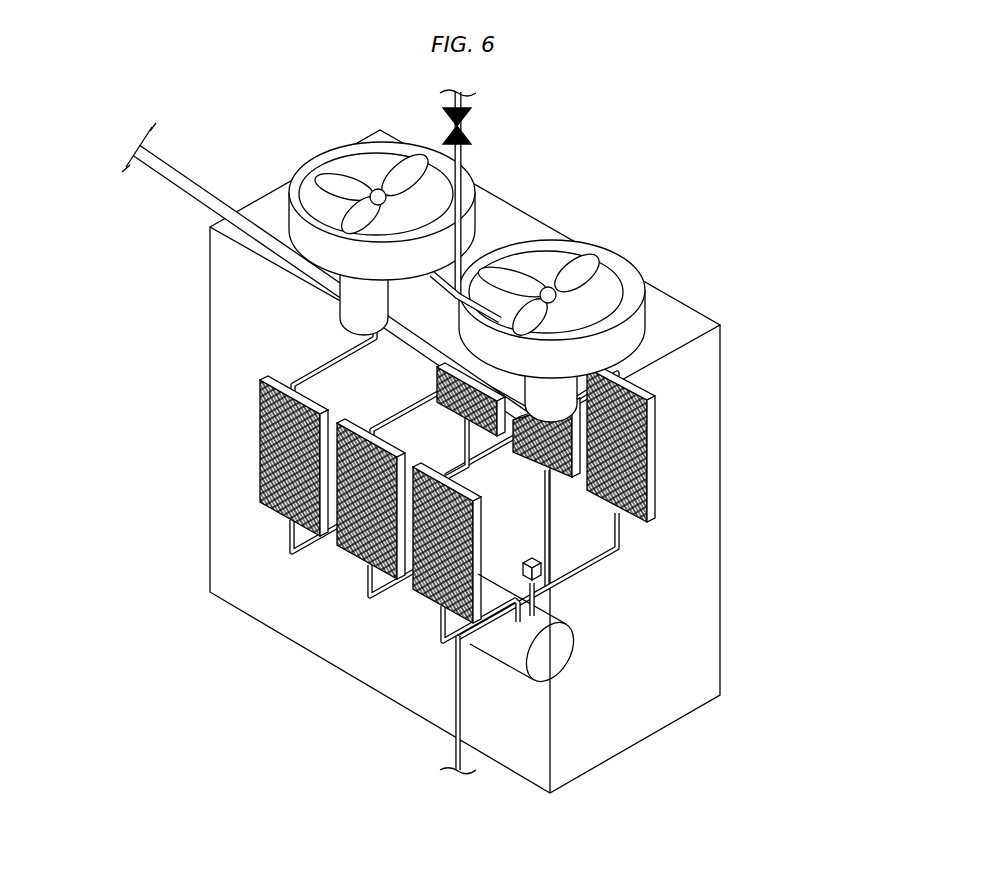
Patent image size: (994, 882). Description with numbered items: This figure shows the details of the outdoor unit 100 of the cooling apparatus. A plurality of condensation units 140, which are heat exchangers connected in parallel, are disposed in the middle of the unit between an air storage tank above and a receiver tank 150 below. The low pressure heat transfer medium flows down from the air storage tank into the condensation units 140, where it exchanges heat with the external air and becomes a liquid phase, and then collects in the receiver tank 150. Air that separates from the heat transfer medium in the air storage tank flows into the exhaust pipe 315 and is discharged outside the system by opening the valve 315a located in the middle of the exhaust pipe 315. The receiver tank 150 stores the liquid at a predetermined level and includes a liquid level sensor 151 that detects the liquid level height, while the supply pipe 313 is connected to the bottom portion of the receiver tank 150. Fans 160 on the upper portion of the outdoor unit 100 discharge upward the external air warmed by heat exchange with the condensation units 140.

The outdoor unit 100 is at (690, 233).
The condensation units 140 is at (405, 400).
The receiver tank 150 is at (397, 603).
The liquid level sensor 151 is at (550, 578).
The fans 160 is at (373, 185).
The supply pipe 313 is at (450, 703).
The exhaust pipe 315 is at (218, 196).
The valve 315a is at (468, 124).